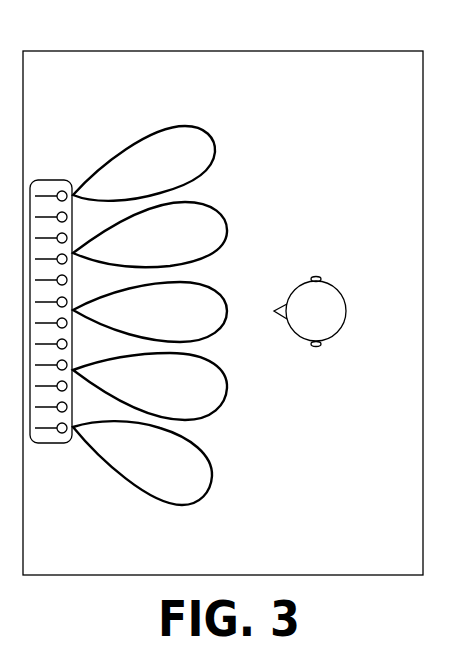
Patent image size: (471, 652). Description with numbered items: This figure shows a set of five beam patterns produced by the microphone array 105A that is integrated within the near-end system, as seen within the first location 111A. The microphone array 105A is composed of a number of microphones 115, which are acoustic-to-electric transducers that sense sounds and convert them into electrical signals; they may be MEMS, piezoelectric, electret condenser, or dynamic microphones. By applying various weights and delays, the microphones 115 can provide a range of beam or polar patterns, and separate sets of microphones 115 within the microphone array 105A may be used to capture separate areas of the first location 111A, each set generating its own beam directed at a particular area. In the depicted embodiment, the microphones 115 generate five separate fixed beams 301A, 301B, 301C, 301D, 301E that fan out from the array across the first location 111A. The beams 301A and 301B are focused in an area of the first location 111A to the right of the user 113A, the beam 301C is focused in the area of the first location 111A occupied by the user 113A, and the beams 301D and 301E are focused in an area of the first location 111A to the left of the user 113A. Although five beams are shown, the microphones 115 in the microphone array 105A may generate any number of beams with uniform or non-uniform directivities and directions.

The first location 111A is at (351, 51).
The microphone array 105A is at (52, 181).
The microphones 115 is at (61, 434).
The fixed beam 301A is at (144, 163).
The fixed beam 301B is at (150, 234).
The fixed beam 301C is at (150, 312).
The fixed beam 301D is at (150, 386).
The fixed beam 301E is at (142, 463).
The user 113A is at (316, 302).